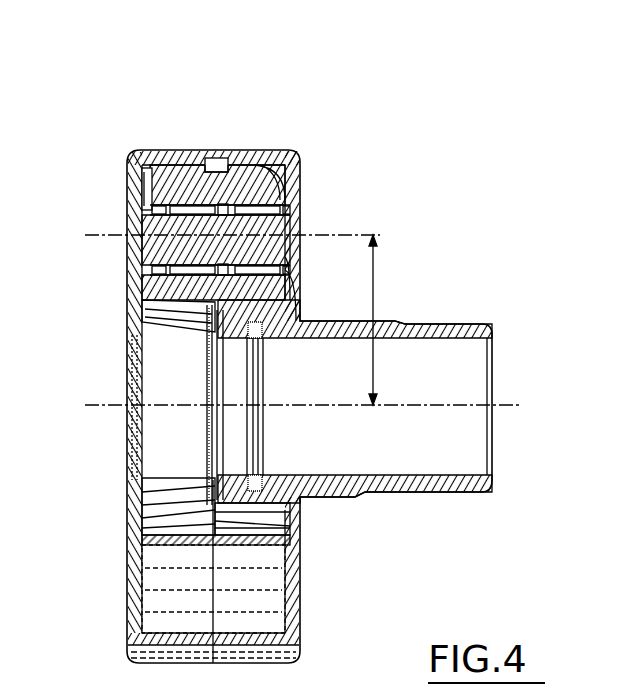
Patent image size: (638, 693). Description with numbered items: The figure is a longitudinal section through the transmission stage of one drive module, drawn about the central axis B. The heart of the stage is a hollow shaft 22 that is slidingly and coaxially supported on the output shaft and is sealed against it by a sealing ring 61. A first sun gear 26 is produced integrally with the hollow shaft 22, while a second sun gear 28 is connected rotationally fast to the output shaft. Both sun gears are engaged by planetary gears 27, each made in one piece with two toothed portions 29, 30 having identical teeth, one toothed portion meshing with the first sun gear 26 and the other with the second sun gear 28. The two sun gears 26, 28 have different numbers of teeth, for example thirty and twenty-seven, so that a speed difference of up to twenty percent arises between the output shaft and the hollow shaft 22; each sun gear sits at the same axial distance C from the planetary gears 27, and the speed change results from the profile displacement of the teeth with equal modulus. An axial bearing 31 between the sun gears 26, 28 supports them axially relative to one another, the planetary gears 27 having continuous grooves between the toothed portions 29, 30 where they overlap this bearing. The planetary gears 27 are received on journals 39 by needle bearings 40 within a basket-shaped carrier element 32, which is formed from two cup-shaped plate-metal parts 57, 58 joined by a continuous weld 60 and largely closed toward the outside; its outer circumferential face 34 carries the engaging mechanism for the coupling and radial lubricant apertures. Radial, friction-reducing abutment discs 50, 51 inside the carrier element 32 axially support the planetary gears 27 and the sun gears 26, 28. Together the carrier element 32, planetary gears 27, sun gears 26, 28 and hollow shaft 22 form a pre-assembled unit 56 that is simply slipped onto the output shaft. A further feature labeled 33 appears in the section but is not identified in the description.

The hollow shaft 22 is at (400, 325).
The first sun gear 26 is at (290, 294).
The planetary gears 27 is at (143, 178).
The second sun gear 28 is at (143, 314).
The toothed portion 29 is at (292, 151).
The toothed portion 30 is at (172, 178).
The axial bearing 31 is at (207, 347).
The carrier element 32 is at (271, 387).
The groove 33 is at (221, 165).
The outer circumferential face 34 is at (265, 660).
The journals 39 is at (300, 225).
The needle bearings 40 is at (290, 261).
The abutment disc 50 is at (290, 521).
The abutment disc 51 is at (140, 515).
The pre-assembled unit 56 is at (433, 168).
The cup-shaped carrier part 57 is at (180, 150).
The cup-shaped carrier part 58 is at (262, 150).
The continuous weld 60 is at (215, 163).
The sealing ring 61 is at (260, 470).
The axis B is at (516, 407).
The axial distance C is at (380, 320).